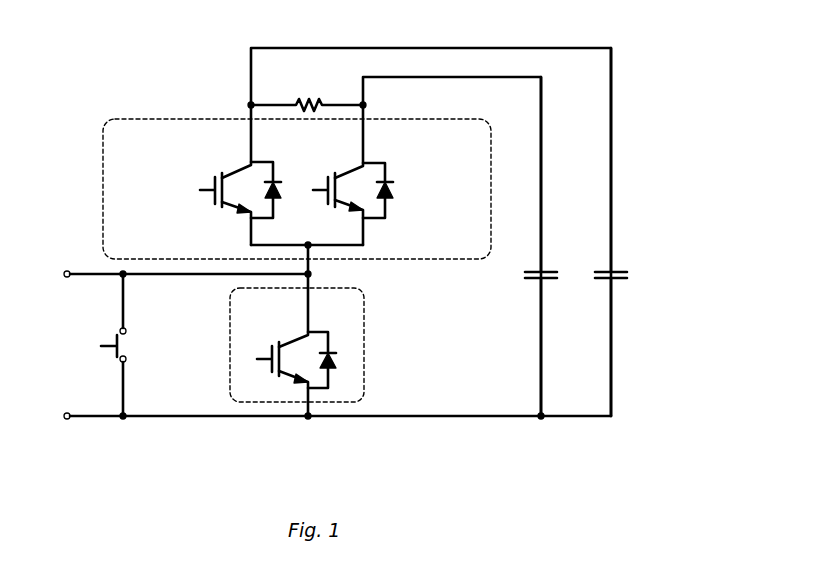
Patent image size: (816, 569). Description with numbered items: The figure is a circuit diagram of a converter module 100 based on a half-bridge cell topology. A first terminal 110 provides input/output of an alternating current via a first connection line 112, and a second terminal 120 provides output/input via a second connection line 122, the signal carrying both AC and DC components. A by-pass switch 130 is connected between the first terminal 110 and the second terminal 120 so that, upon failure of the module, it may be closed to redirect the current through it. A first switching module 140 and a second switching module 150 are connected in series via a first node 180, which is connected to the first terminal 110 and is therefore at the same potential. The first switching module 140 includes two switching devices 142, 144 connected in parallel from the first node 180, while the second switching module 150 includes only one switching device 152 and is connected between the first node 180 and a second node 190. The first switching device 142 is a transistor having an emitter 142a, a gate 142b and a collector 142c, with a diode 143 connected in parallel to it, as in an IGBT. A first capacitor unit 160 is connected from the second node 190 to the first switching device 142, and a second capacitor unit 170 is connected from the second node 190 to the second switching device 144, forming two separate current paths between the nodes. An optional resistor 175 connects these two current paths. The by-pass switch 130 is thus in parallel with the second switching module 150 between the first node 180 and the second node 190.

The converter module 100 is at (112, 61).
The first terminal 110 is at (118, 278).
The first connection line 112 is at (150, 278).
The second terminal 120 is at (118, 420).
The second connection line 122 is at (180, 420).
The by-pass switch 130 is at (105, 359).
The first switching module 140 is at (102, 155).
The first switching device 142 is at (182, 205).
The emitter 142a is at (245, 169).
The gate 142b is at (212, 190).
The collector 142c is at (233, 208).
The diode 143 is at (278, 179).
The second switching device 144 is at (400, 157).
The second switching module 150 is at (365, 345).
The switching device 152 is at (295, 331).
The first capacitor unit 160 is at (622, 270).
The second capacitor unit 170 is at (552, 270).
The resistor 175 is at (303, 100).
The first node 180 is at (318, 275).
The second node 190 is at (309, 420).